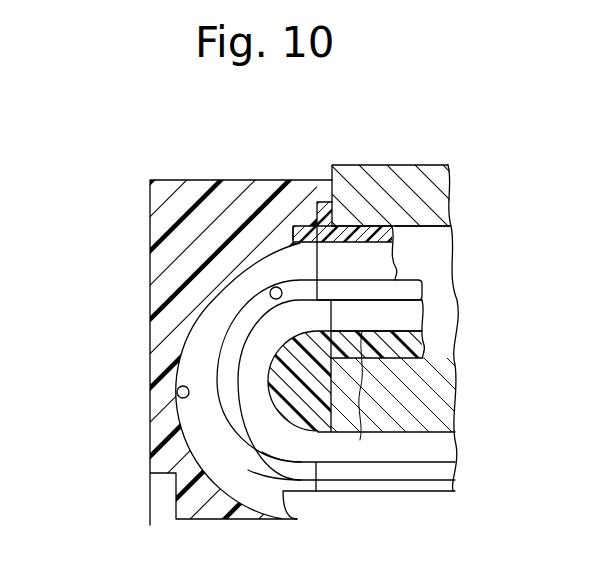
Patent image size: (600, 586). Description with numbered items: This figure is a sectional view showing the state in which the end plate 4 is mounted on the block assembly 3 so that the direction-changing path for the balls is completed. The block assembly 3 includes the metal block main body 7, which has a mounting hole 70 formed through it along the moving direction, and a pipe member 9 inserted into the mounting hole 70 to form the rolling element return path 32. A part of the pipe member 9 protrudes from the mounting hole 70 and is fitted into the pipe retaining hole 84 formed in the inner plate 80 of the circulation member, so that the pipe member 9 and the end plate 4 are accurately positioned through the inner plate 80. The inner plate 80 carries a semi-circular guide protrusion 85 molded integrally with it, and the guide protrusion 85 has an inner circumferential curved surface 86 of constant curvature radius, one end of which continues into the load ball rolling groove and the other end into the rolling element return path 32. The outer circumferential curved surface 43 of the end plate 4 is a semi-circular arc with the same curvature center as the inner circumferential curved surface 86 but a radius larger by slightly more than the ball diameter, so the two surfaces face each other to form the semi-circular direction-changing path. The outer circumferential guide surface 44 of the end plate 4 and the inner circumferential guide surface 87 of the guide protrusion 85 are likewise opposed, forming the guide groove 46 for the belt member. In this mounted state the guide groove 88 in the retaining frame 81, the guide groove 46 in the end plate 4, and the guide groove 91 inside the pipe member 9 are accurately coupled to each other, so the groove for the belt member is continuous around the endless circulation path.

The block assembly 3 is at (474, 182).
The end plate 4 is at (143, 293).
The block main body 7 is at (398, 168).
The pipe member 9 is at (357, 238).
The rolling element return path 32 is at (410, 320).
The outer circumferential curved surface 43 is at (177, 393).
The outer circumferential guide surface 44 is at (270, 292).
The guide groove 46 is at (228, 374).
The mounting hole 70 is at (411, 226).
The inner plate 80 is at (323, 204).
The retaining frame 81 is at (377, 493).
The pipe retaining hole 84 is at (302, 240).
The guide protrusion 85 is at (275, 461).
The inner circumferential curved surface 86 is at (262, 388).
The inner circumferential guide surface 87 is at (222, 333).
The guide groove 88 is at (440, 472).
The guide groove 91 is at (405, 272).